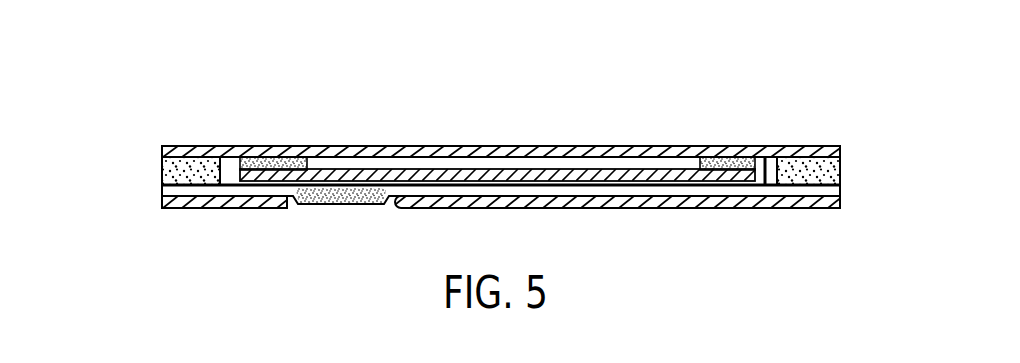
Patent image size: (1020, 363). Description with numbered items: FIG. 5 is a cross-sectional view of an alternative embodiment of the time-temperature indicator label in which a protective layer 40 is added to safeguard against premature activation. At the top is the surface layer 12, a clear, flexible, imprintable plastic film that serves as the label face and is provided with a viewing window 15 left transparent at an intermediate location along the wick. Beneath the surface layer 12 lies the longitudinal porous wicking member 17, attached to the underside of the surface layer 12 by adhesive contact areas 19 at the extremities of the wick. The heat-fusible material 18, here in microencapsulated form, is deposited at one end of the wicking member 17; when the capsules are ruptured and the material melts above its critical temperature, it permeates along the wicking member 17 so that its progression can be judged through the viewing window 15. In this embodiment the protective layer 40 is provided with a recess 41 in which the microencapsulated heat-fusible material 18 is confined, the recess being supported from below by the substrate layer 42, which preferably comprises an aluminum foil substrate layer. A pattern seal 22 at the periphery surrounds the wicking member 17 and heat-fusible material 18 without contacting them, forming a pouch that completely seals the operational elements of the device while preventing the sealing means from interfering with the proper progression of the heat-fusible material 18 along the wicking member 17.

The surface layer 12 is at (670, 150).
The viewing window 15 is at (528, 152).
The wicking member 17 is at (422, 178).
The heat-fusible material 18 is at (334, 203).
The adhesive contact areas 19 is at (275, 158).
The pattern seal 22 is at (166, 172).
The protective layer 40 is at (188, 193).
The recess 41 is at (718, 190).
The substrate layer 42 is at (217, 200).